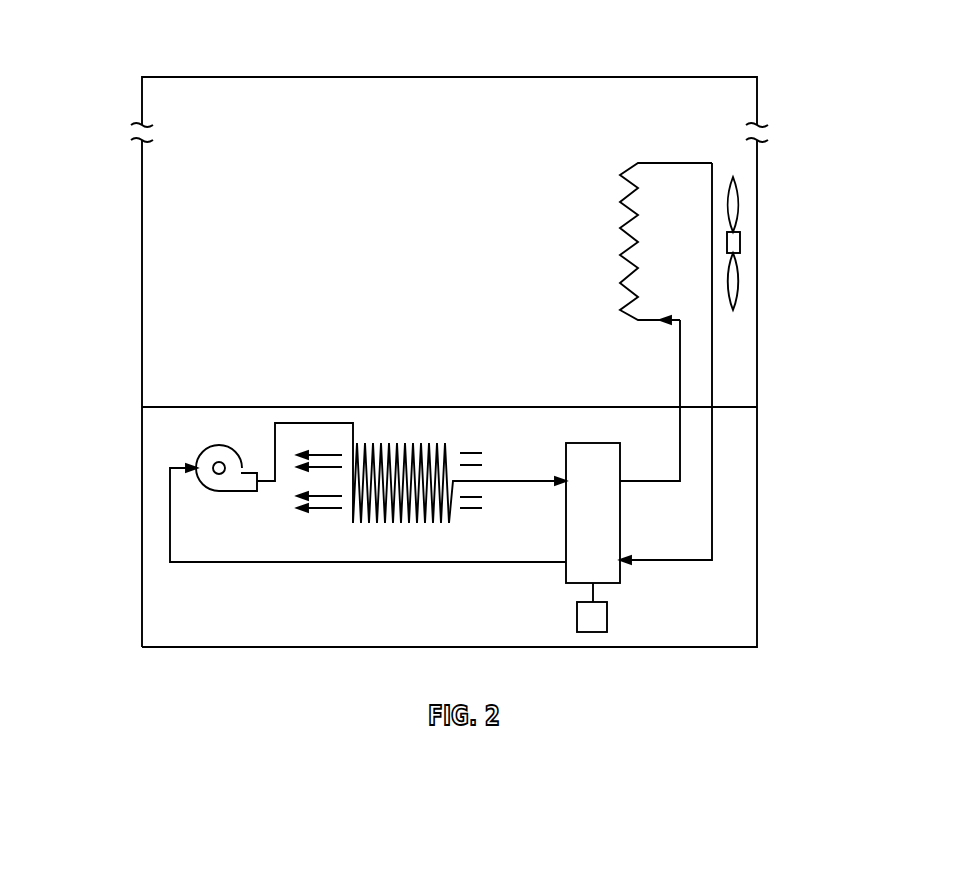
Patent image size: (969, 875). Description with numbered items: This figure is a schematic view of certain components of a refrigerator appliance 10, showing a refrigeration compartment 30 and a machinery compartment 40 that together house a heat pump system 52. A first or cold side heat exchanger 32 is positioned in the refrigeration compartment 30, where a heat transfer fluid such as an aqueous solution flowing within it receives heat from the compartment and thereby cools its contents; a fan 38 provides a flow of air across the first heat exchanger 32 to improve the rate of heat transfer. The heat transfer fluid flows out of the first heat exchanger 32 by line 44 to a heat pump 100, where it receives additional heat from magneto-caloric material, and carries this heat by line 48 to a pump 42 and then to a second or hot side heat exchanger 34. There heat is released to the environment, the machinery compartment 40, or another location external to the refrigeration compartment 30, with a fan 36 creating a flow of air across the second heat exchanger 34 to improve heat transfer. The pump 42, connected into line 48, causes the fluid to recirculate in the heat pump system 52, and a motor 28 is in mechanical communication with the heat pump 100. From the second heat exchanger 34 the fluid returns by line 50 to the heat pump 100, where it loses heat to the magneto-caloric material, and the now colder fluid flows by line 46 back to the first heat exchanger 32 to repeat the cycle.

The refrigerator appliance 10 is at (105, 165).
The motor 28 is at (577, 617).
The refrigeration compartment 30 is at (477, 127).
The first or cold side heat exchanger 32 is at (620, 187).
The second or hot side heat exchanger 34 is at (420, 455).
The fan 36 is at (333, 450).
The fan 38 is at (742, 205).
The machinery compartment 40 is at (158, 438).
The pump 42 is at (220, 445).
The line 44 is at (752, 342).
The line 46 is at (680, 385).
The line 48 is at (300, 423).
The line 50 is at (505, 481).
The heat pump system 52 is at (429, 306).
The heat pump 100 is at (597, 432).